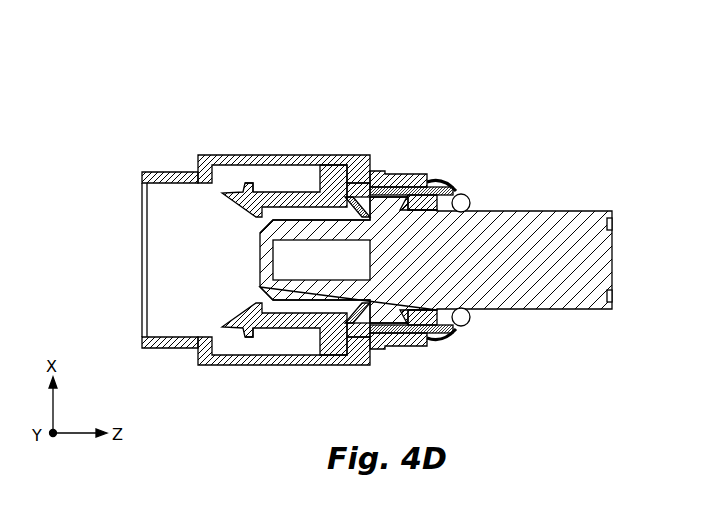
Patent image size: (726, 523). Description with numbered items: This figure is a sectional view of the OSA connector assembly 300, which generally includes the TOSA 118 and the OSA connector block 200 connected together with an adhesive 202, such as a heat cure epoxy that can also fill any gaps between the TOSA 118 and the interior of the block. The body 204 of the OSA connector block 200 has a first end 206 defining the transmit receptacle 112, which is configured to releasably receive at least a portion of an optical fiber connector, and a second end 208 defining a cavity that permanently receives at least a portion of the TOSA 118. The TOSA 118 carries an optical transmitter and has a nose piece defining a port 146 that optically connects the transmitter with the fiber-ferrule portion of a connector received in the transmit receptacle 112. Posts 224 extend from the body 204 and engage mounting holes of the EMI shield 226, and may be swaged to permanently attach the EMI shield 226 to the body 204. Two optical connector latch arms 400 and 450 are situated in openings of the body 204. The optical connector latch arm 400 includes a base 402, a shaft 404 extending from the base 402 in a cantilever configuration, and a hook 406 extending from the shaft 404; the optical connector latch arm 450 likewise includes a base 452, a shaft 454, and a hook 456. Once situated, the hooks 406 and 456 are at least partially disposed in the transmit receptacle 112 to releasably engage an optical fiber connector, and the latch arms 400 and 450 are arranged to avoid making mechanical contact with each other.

The TOSA 118 is at (570, 195).
The base 452 is at (383, 348).
The port 146 is at (292, 258).
The OSA connector block 200 is at (252, 130).
The first end 206 is at (142, 342).
The transmit receptacle 112 is at (185, 291).
The body 204 is at (227, 156).
The optical connector latch arm 400 is at (330, 143).
The shaft 404 is at (277, 192).
The shaft 454 is at (277, 318).
The hook 406 is at (240, 214).
The hook 456 is at (242, 305).
The optical connector latch arm 450 is at (327, 375).
The OSA connector assembly 300 is at (416, 88).
The adhesive 202 is at (404, 182).
The base 402 is at (390, 178).
The EMI shield 226 is at (437, 343).
The posts 224 is at (462, 198).
The second end 208 is at (440, 339).